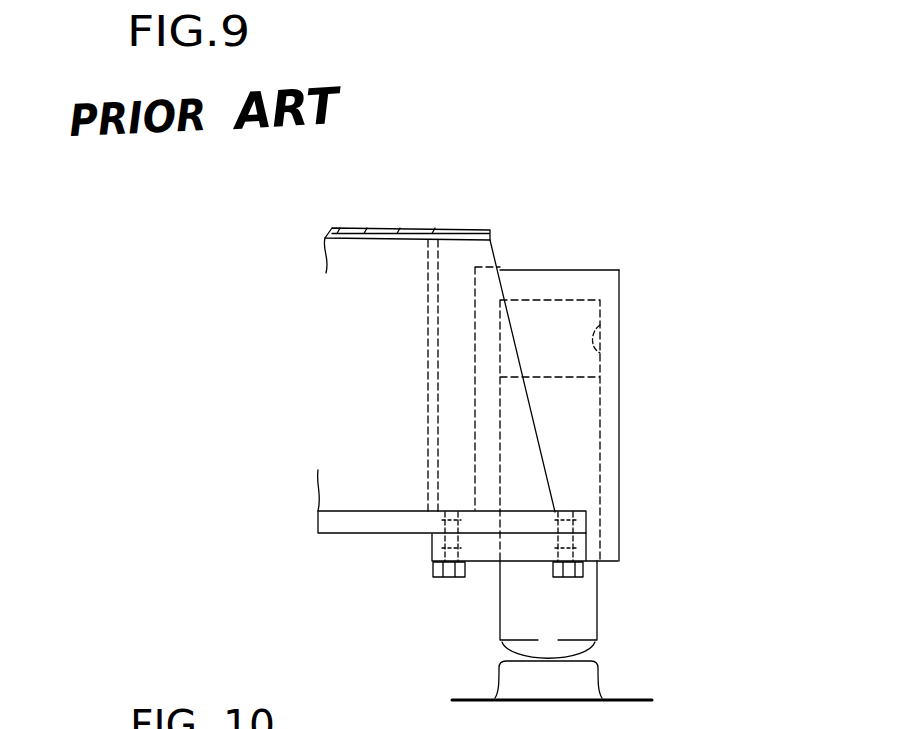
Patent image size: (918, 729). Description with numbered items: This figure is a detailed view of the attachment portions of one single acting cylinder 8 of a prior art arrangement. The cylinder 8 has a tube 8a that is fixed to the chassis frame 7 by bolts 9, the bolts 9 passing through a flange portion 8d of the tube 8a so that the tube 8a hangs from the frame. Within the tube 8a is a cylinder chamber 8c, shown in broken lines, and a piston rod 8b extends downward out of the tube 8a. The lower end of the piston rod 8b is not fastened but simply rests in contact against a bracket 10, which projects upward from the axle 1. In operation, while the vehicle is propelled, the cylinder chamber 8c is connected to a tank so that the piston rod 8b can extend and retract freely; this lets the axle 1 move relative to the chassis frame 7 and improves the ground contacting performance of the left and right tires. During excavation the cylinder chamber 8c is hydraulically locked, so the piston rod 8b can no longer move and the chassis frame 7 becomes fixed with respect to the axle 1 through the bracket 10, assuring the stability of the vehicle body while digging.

The chassis frame 7 is at (383, 227).
The single acting cylinder 8 is at (575, 262).
The tube 8a is at (619, 362).
The piston rod 8b is at (599, 608).
The cylinder chamber 8c is at (602, 355).
The flange portion 8d is at (432, 547).
The bolts 9 is at (440, 578).
The bracket 10 is at (593, 675).
The axle 1 is at (640, 705).